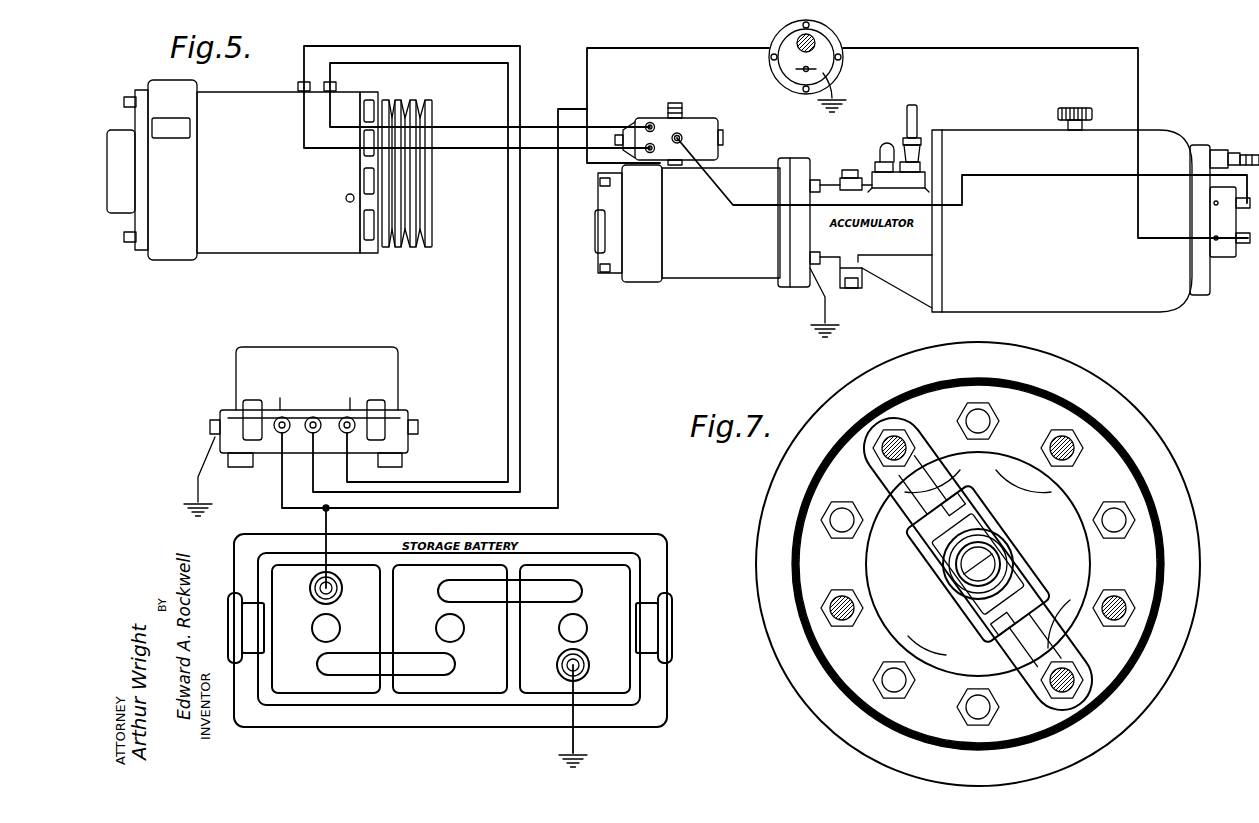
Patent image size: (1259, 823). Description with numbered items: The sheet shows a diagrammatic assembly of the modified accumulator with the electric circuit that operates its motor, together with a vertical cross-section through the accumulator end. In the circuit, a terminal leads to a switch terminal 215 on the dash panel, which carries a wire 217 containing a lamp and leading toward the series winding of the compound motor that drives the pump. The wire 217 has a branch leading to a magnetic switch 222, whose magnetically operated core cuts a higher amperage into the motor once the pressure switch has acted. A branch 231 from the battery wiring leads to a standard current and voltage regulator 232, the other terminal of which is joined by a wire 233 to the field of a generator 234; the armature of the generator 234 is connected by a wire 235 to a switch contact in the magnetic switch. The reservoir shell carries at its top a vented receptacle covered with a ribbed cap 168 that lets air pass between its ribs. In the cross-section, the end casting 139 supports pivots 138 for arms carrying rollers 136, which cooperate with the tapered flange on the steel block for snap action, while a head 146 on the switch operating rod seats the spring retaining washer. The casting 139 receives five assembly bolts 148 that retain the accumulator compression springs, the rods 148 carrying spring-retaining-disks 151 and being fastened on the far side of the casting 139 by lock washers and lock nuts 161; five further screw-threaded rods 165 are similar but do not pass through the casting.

In FIG. 5, the generator 234 is at (269, 170).
In FIG. 5, the current and voltage regulator 232 is at (366, 346).
In FIG. 5, the branch 231 is at (280, 482).
In FIG. 5, the wire 233 is at (477, 269).
In FIG. 5, the wire 235 is at (450, 482).
In FIG. 5, the wire 217 is at (723, 48).
In FIG. 5, the switch terminal 215 is at (826, 70).
In FIG. 5, the magnetic switch 222 is at (702, 127).
In FIG. 5, the ribbed cap 168 is at (1084, 107).
In FIG. 7, the assembly bolts 148 is at (900, 443).
In FIG. 7, the pivots 138 is at (975, 515).
In FIG. 7, the end casting 139 is at (1020, 528).
In FIG. 7, the spring-retaining-disks 151 is at (1085, 584).
In FIG. 7, the rollers 136 is at (952, 566).
In FIG. 7, the head 146 is at (982, 573).
In FIG. 7, the screw-threaded rods 165 is at (1064, 676).
In FIG. 7, the lock nuts 161 is at (1052, 692).